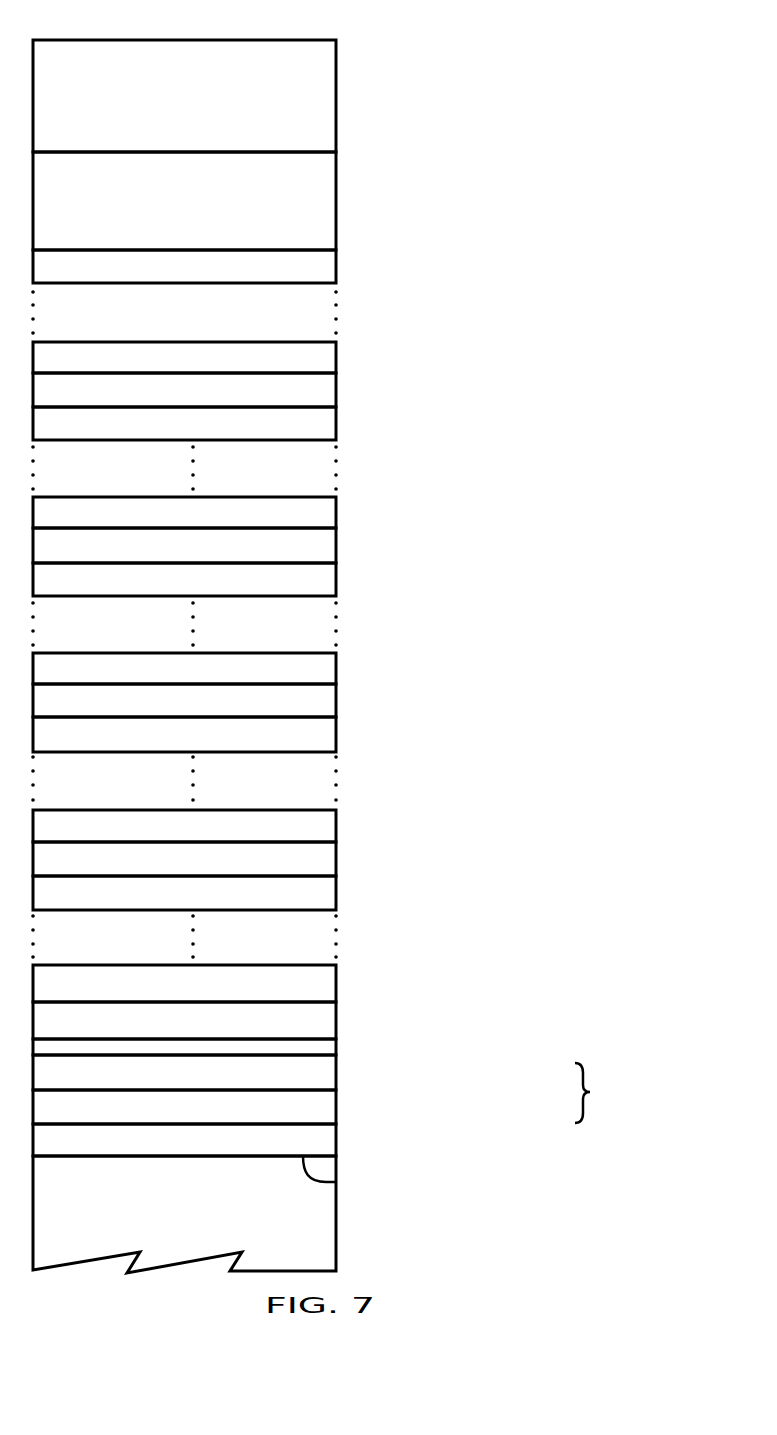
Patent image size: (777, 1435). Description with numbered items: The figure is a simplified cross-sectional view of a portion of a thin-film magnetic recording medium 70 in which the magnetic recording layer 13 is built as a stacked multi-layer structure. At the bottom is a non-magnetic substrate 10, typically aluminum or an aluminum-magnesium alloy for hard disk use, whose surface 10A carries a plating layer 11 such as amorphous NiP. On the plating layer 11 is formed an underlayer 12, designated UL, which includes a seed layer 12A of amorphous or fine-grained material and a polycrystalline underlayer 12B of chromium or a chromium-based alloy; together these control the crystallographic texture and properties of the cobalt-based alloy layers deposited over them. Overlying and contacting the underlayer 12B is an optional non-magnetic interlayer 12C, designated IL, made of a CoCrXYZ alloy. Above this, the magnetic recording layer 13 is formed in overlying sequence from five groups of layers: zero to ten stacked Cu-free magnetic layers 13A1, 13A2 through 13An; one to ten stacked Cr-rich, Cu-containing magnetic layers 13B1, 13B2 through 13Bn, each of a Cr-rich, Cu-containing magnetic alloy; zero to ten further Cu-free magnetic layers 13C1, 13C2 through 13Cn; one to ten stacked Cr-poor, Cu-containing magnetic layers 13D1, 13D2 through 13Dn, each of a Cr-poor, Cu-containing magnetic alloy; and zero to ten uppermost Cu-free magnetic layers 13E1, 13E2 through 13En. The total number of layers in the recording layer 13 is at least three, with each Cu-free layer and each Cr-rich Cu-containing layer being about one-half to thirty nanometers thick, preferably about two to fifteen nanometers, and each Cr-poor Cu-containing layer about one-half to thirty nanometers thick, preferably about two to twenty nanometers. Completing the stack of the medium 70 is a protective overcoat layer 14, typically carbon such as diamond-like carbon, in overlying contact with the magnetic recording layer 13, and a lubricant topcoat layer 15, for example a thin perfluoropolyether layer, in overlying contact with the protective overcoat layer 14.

The thin-film magnetic recording medium 70 is at (366, 47).
The lubricant topcoat layer 15 is at (346, 91).
The protective overcoat layer 14 is at (346, 206).
The magnetic recording layer 13 is at (608, 253).
The Cu-free magnetic layer 13En is at (346, 264).
The Cu-free magnetic layer 13E2 is at (346, 350).
The Cu-free magnetic layer 13E1 is at (346, 387).
The Cr-poor, Cu-containing magnetic layer 13Dn is at (346, 420).
The Cr-poor, Cu-containing magnetic layer 13D2 is at (346, 510).
The Cr-poor, Cu-containing magnetic layer 13D1 is at (346, 546).
The Cu-free magnetic layer 13Cn is at (346, 581).
The Cu-free magnetic layer 13C2 is at (346, 664).
The Cu-free magnetic layer 13C1 is at (346, 697).
The Cr-rich, Cu-containing magnetic layer 13Bn is at (346, 731).
The Cr-rich, Cu-containing magnetic layer 13B2 is at (346, 820).
The Cr-rich, Cu-containing magnetic layer 13B1 is at (346, 856).
The Cu-free magnetic layer 13An is at (346, 891).
The Cu-free magnetic layer 13A2 is at (346, 981).
The Cu-free magnetic layer 13A1 is at (346, 1015).
The underlayer 12 is at (358, 1089).
The non-magnetic interlayer 12C is at (346, 1043).
The polycrystalline underlayer 12B is at (346, 1073).
The seed layer 12A is at (346, 1106).
The plating layer 11 is at (346, 1137).
The substrate surface 10A is at (336, 1182).
The non-magnetic substrate 10 is at (346, 1226).